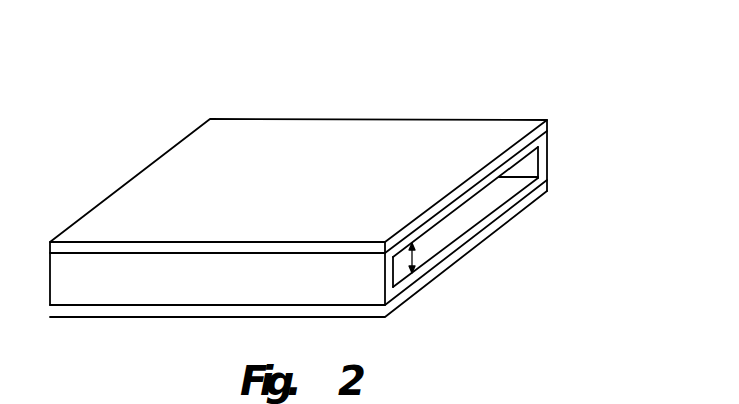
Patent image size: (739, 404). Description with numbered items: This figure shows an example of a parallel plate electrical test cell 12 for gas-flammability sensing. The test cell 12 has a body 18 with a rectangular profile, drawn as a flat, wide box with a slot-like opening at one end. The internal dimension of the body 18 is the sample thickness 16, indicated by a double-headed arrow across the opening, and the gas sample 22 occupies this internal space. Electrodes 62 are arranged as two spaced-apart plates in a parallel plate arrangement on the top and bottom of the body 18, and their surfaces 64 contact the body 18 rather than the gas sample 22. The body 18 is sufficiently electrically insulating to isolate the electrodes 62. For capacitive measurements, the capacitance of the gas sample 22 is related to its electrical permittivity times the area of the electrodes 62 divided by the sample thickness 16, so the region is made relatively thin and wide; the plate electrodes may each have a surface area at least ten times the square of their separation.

The test cell 12 is at (340, 194).
The electrodes 62 is at (520, 119).
The body 18 is at (548, 148).
The gas sample 22 is at (510, 183).
The surface 64 is at (441, 214).
The sample thickness 16 is at (418, 258).